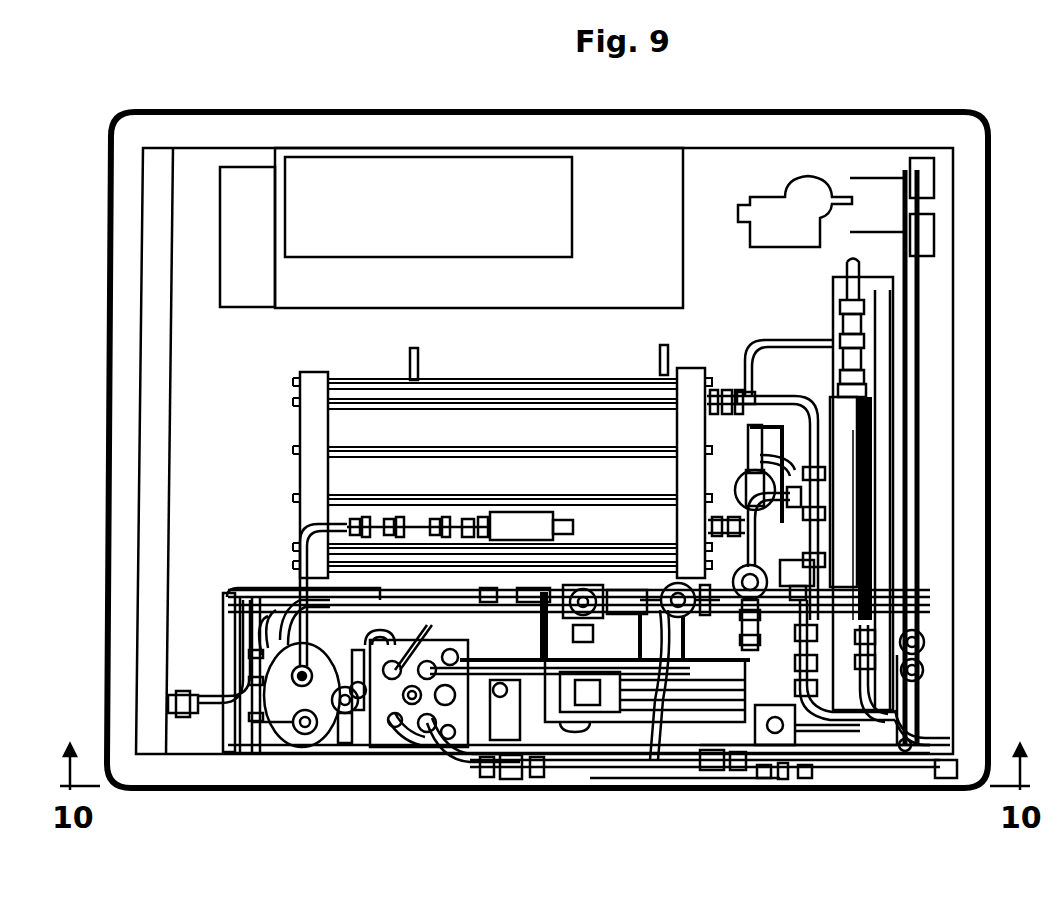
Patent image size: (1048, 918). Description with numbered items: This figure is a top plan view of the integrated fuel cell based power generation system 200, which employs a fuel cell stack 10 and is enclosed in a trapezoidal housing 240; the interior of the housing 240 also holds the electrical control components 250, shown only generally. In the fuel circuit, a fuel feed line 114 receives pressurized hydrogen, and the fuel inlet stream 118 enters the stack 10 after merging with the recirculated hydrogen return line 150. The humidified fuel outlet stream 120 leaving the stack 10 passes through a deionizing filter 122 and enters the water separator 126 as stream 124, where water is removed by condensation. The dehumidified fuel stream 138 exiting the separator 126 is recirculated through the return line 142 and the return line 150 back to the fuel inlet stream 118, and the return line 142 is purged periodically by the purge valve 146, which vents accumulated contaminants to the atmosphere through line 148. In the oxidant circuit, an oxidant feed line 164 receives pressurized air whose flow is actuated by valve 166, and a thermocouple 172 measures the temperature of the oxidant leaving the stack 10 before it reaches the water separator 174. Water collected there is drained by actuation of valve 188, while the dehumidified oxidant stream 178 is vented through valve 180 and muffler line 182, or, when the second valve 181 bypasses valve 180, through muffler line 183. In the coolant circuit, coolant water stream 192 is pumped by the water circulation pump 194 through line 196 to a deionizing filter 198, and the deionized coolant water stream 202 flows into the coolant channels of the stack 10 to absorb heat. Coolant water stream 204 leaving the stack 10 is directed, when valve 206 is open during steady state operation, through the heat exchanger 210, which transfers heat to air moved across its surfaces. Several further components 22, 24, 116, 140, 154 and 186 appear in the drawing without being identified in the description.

The integrated fuel cell based power generation system 200 is at (106, 110).
The trapezoidal housing 240 is at (133, 128).
The electrical control components 250 is at (428, 174).
The pressure switch 154 is at (806, 182).
The heat exchanger 210 is at (885, 300).
The deionized coolant water stream 202 is at (775, 338).
The bracket 24 is at (668, 365).
The purge valve 146 is at (745, 575).
The bracket 22 is at (410, 360).
The deionizing filter 122 is at (505, 525).
The valve 116 is at (585, 598).
The humidified fuel outlet stream 120 is at (678, 598).
The valve 166 is at (560, 590).
The coolant water stream 204 is at (865, 400).
The deionizing filter 198 is at (860, 425).
The return line 142 is at (810, 470).
The recirculated hydrogen return line 150 is at (820, 498).
The valve 206 is at (830, 540).
The line 148 is at (830, 573).
The muffler line 182 is at (920, 635).
The muffler line 183 is at (920, 665).
The line 196 is at (930, 712).
The valve 180 is at (955, 762).
The fuel cell stack 10 is at (356, 483).
The stream 124 is at (310, 530).
The conduit 140 is at (288, 623).
The fuel feed line 114 is at (225, 612).
The oxidant feed line 164 is at (245, 640).
The dehumidified fuel stream 138 is at (258, 664).
The water separator 126 is at (325, 725).
The valve 188 is at (350, 700).
The manifold 186 is at (395, 722).
The coolant water stream 192 is at (405, 742).
The water separator 174 is at (468, 748).
The water circulation pump 194 is at (540, 750).
The thermocouple 172 is at (652, 765).
The fuel inlet stream 118 is at (715, 725).
The dehumidified oxidant stream 178 is at (722, 765).
The second valve 181 is at (772, 740).